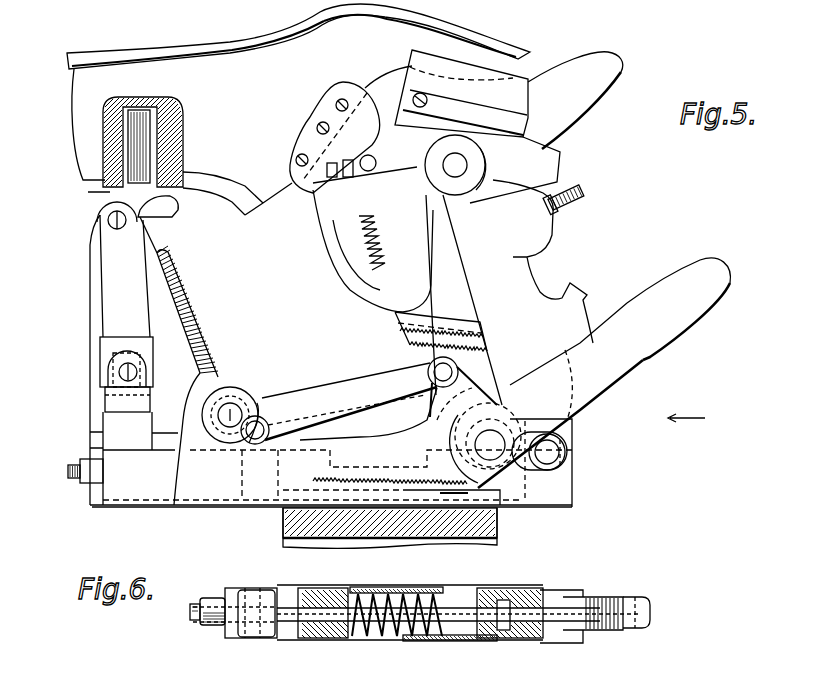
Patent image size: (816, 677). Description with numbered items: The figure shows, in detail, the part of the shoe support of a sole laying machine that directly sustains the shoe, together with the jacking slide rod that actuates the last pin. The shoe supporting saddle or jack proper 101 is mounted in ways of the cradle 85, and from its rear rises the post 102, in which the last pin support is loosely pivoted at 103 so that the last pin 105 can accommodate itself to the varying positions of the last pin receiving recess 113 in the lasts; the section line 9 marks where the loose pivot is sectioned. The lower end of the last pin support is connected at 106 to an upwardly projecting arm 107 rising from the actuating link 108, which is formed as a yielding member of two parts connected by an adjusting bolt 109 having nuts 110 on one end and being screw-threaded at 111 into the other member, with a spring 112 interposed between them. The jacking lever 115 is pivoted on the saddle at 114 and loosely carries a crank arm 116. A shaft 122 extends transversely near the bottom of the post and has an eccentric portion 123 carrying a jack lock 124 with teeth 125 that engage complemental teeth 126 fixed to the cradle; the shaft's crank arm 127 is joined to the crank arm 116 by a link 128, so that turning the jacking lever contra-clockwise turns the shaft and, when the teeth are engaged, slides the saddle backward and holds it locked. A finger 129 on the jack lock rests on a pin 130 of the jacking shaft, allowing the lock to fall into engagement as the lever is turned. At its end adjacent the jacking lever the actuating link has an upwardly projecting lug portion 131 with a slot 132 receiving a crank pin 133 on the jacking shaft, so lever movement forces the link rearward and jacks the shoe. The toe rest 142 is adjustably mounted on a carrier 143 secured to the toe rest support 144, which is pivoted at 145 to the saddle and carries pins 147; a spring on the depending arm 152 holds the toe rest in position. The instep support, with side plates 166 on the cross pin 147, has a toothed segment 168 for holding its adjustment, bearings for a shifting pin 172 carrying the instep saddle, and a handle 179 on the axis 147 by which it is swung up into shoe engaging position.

In FIG. 5, the section line 9— 9 is at (100, 83).
In FIG. 5, the cradle 85 is at (500, 520).
In FIG. 5, the shoe supporting saddle or jack proper 101 is at (88, 507).
In FIG. 5, the post 102 is at (90, 285).
In FIG. 5, the pivot (fulcrum of last pin support) 103 is at (110, 213).
In FIG. 5, the last pin 105 is at (130, 136).
In FIG. 5, the connection of last pin support to arm 106 is at (108, 367).
In FIG. 5, the upwardly projecting arm 107 is at (108, 418).
In FIG. 6, the upwardly projecting arm 107 is at (267, 639).
In FIG. 6, the actuating link 108 is at (330, 641).
In FIG. 6, the adjusting bolt 109 is at (320, 616).
In FIG. 6, the nuts 110 is at (222, 625).
In FIG. 6, the screw-threaded end 111 is at (513, 600).
In FIG. 6, the spring 112 is at (450, 600).
In FIG. 5, the last pin receiving recess 113 is at (103, 120).
In FIG. 5, the pivot (jacking shaft) 114 is at (560, 481).
In FIG. 5, the jacking lever 115 is at (708, 298).
In FIG. 5, the crank arm 116 is at (497, 340).
In FIG. 5, the shaft 122 is at (240, 405).
In FIG. 5, the eccentric portion 123 is at (232, 412).
In FIG. 5, the jack lock 124 is at (280, 400).
In FIG. 5, the teeth 125 is at (370, 484).
In FIG. 5, the complemental teeth 126 is at (352, 484).
In FIG. 5, the crank arm 127 is at (232, 445).
In FIG. 5, the link 128 is at (345, 400).
In FIG. 5, the finger 129 is at (433, 420).
In FIG. 5, the pin 130 is at (553, 449).
In FIG. 6, the upwardly projecting lug portion 131 is at (590, 602).
In FIG. 5, the slot 132 is at (567, 452).
In FIG. 6, the slot 132 is at (618, 630).
In FIG. 5, the crank pin 133 is at (523, 430).
In FIG. 5, the toe rest 142 is at (517, 85).
In FIG. 5, the carrier 143 is at (555, 153).
In FIG. 5, the toe rest support 144 is at (555, 247).
In FIG. 5, the pivot of toe rest support 145 is at (587, 398).
In FIG. 5, the pins (cross pin / pivotal axis) 147 is at (455, 165).
In FIG. 5, the depending arm 152 is at (440, 262).
In FIG. 5, the side plates 166 is at (378, 289).
In FIG. 5, the segment (toothed rack) 168 is at (407, 337).
In FIG. 5, the shifting pin 172 is at (367, 170).
In FIG. 5, the handle 179 is at (612, 65).